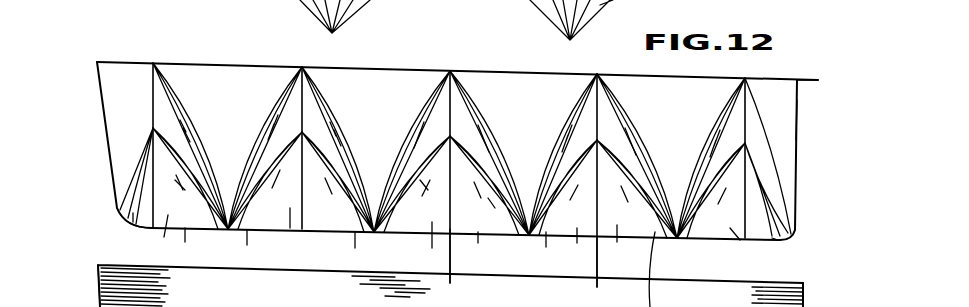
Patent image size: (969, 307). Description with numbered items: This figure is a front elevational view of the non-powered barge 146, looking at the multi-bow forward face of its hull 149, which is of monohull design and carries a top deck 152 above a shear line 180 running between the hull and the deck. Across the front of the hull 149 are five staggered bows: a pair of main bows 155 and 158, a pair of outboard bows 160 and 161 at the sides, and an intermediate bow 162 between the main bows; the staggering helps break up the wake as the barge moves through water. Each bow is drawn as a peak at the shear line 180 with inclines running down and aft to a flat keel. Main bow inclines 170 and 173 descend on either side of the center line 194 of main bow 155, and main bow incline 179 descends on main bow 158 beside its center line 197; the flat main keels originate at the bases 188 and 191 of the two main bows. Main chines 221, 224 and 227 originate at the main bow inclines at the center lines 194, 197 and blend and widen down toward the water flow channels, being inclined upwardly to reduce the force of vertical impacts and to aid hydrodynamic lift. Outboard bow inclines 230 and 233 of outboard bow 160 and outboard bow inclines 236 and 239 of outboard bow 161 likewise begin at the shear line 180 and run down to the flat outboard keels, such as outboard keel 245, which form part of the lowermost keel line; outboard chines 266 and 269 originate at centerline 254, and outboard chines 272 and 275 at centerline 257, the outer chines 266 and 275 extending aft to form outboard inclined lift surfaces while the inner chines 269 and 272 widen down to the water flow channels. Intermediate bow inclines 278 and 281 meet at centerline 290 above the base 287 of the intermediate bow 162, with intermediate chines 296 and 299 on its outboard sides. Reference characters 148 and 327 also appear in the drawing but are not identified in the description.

The non-powered barge 146 is at (130, 50).
The support member 148 is at (65, 286).
The hull 149 is at (820, 126).
The top deck 152 is at (425, 62).
The main bow 155 is at (338, 34).
The main bow 158 is at (285, 50).
The outboard bow 160 is at (785, 68).
The outboard bow 161 is at (128, 85).
The intermediate bow 162 is at (492, 102).
The main bow incline 170 is at (631, 266).
The main bow incline 173 is at (588, 247).
The main bow incline 179 is at (298, 235).
The shear line 180 is at (826, 96).
The base 188 is at (312, 228).
The base 191 is at (611, 272).
The center line 194 is at (603, 108).
The center line 197 is at (302, 97).
The main chine 221 is at (544, 253).
The main chine 224 is at (369, 252).
The main chine 227 is at (251, 249).
The outboard bow incline 230 is at (772, 238).
The outboard bow incline 233 is at (730, 228).
The outboard bow incline 236 is at (160, 240).
The outboard bow incline 239 is at (133, 214).
The outboard keel 245 is at (207, 243).
The centerline 254 is at (746, 104).
The centerline 257 is at (152, 106).
The outboard chine 266 is at (767, 213).
The outboard chine 269 is at (707, 207).
The outboard chine 272 is at (184, 187).
The outboard chine 275 is at (133, 211).
The intermediate bow incline 278 is at (488, 251).
The intermediate bow incline 281 is at (426, 243).
The base 287 is at (471, 268).
The centerline 290 is at (451, 100).
The intermediate chine 296 is at (491, 202).
The intermediate chine 299 is at (425, 182).
The top strip surface 327 is at (449, 167).